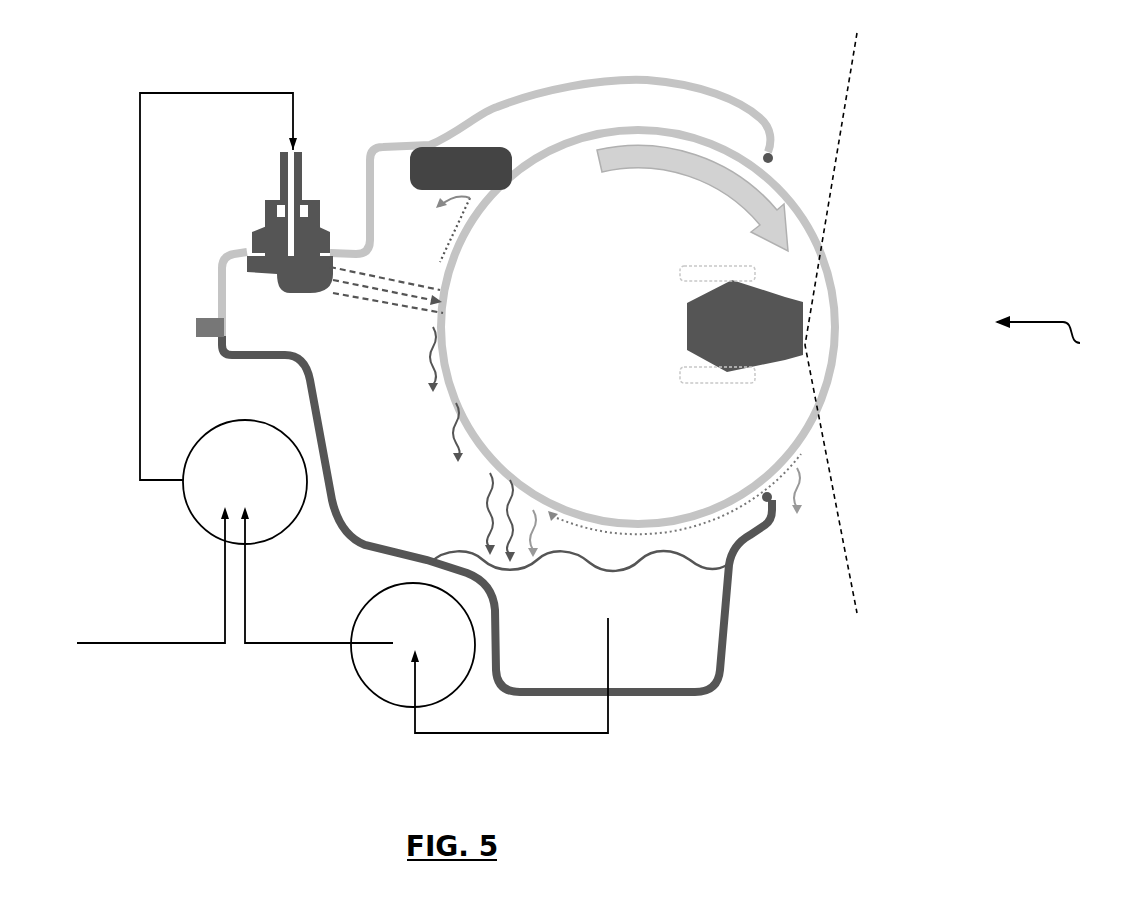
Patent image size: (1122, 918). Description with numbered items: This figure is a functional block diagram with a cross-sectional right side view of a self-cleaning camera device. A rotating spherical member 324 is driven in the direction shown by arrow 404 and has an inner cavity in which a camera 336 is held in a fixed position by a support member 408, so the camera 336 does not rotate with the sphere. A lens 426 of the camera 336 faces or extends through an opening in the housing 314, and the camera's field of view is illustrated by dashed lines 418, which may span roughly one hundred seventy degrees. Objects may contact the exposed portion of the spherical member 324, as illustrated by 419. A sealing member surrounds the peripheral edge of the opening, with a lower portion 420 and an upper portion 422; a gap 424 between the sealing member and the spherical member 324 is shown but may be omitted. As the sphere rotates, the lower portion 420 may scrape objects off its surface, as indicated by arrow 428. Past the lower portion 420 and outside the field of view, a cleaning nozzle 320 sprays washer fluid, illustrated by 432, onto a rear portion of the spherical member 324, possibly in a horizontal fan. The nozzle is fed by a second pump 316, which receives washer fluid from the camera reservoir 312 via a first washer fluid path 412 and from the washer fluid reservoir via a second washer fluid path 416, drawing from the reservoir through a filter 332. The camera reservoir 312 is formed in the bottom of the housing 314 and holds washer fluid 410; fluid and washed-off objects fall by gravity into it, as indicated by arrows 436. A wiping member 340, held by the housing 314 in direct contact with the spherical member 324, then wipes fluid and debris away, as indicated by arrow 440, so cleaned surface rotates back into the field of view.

The camera reservoir 312 is at (717, 630).
The housing 314 is at (563, 93).
The second pump 316 is at (188, 512).
The cleaning nozzle 320 is at (263, 227).
The rotating spherical member 324 is at (793, 208).
The filter 332 is at (372, 692).
The camera 336 is at (703, 330).
The wiping member 340 is at (457, 155).
The arrow 404 is at (687, 157).
The support member 408 is at (683, 270).
The washer fluid 410 is at (578, 584).
The first washer fluid path 412 is at (317, 642).
The second washer fluid path 416 is at (153, 642).
The dashed lines 418 is at (853, 70).
The objects contacting the spherical member 419 is at (1054, 334).
The lower portion of the sealing member 420 is at (767, 493).
The upper portion of the sealing member 422 is at (770, 156).
The gap 424 is at (765, 172).
The lens 426 is at (802, 322).
The arrow 428 is at (800, 505).
The washer fluid 432 is at (390, 292).
The arrows 436 is at (475, 508).
The arrow 440 is at (447, 213).